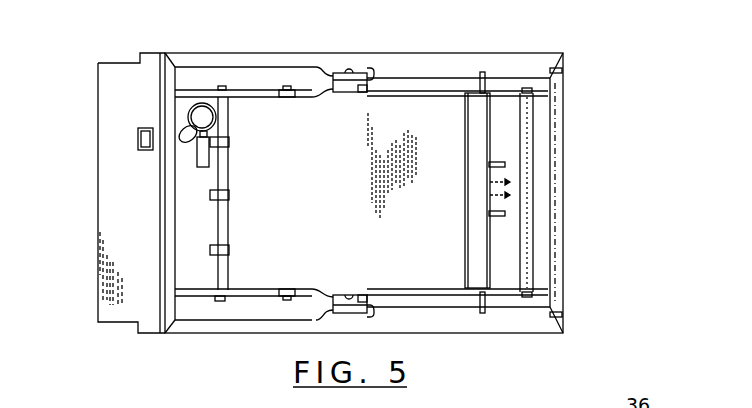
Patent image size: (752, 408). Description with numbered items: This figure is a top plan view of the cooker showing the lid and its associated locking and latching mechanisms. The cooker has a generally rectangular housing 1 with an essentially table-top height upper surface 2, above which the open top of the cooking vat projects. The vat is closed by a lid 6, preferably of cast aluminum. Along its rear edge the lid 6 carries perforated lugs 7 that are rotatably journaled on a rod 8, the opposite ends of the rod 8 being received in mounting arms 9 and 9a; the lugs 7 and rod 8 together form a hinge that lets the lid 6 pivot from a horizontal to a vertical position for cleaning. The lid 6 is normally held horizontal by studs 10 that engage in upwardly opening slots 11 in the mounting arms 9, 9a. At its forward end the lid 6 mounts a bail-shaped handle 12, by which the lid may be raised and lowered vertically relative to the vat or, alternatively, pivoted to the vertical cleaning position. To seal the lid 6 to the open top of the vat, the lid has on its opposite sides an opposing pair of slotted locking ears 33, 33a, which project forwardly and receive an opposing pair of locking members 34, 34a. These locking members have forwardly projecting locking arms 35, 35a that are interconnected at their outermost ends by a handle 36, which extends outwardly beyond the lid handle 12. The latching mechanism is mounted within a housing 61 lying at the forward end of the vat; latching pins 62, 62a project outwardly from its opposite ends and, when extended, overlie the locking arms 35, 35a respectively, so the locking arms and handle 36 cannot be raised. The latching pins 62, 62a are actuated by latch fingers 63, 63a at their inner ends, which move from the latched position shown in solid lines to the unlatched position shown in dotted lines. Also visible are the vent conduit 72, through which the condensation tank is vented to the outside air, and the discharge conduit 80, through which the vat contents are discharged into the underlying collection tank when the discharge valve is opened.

The housing 1 is at (422, 52).
The upper surface 2 is at (457, 72).
The lid 6 is at (349, 195).
The perforated lugs 7 is at (211, 192).
The rod 8 is at (222, 221).
The mounting arm 9 is at (193, 90).
The mounting arm 9a is at (193, 295).
The studs 10 is at (280, 90).
The upwardly opening slots 11 is at (281, 98).
The bail-shaped handle 12 is at (533, 182).
The slotted locking ear 33 is at (328, 78).
The slotted locking ear 33a is at (327, 307).
The locking member 34 is at (351, 100).
The locking member 34a is at (353, 282).
The locking arm 35 is at (527, 72).
The locking arm 35a is at (527, 307).
The handle 36 is at (560, 147).
The housing 61 is at (483, 120).
The latching pin 62 is at (483, 70).
The latching pin 62a is at (478, 313).
The latch finger 63 is at (505, 163).
The latch finger 63a is at (512, 196).
The vent conduit 72 is at (137, 139).
The discharge conduit 80 is at (188, 113).